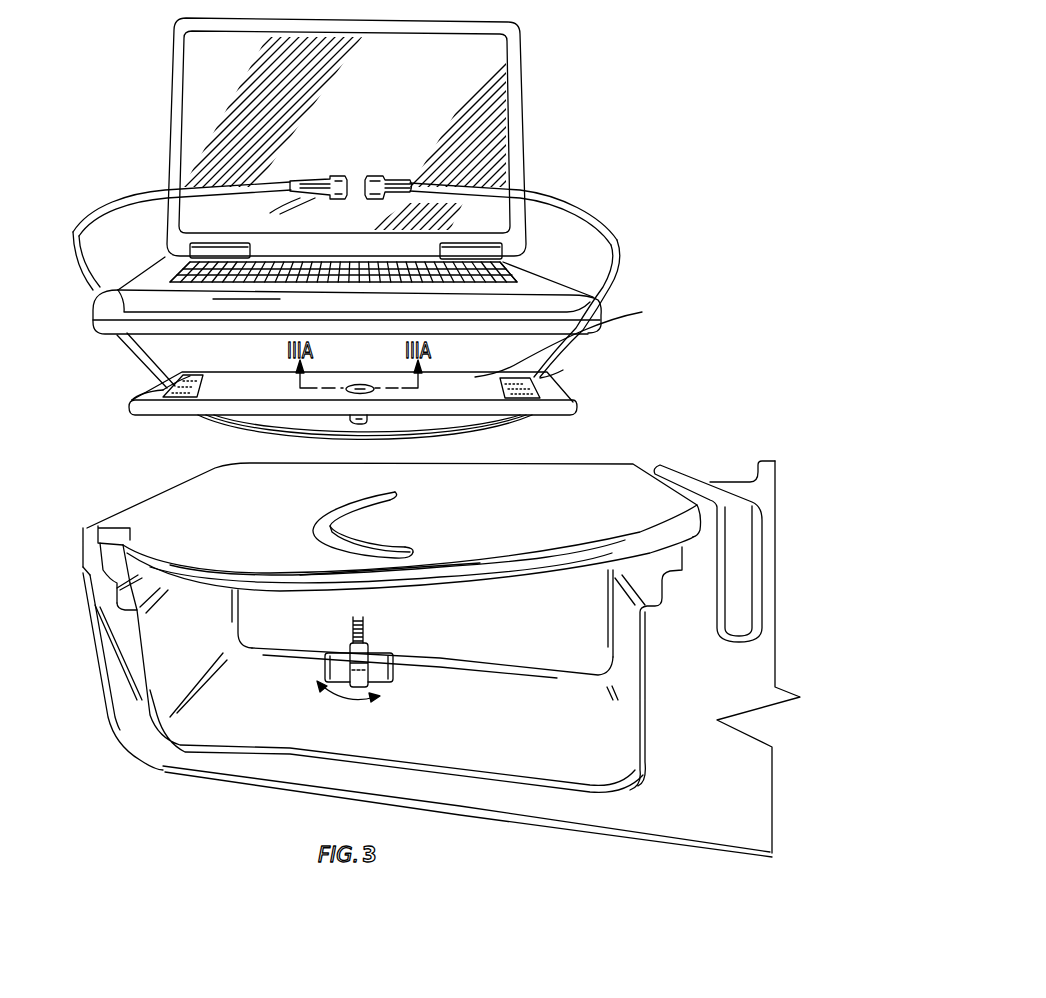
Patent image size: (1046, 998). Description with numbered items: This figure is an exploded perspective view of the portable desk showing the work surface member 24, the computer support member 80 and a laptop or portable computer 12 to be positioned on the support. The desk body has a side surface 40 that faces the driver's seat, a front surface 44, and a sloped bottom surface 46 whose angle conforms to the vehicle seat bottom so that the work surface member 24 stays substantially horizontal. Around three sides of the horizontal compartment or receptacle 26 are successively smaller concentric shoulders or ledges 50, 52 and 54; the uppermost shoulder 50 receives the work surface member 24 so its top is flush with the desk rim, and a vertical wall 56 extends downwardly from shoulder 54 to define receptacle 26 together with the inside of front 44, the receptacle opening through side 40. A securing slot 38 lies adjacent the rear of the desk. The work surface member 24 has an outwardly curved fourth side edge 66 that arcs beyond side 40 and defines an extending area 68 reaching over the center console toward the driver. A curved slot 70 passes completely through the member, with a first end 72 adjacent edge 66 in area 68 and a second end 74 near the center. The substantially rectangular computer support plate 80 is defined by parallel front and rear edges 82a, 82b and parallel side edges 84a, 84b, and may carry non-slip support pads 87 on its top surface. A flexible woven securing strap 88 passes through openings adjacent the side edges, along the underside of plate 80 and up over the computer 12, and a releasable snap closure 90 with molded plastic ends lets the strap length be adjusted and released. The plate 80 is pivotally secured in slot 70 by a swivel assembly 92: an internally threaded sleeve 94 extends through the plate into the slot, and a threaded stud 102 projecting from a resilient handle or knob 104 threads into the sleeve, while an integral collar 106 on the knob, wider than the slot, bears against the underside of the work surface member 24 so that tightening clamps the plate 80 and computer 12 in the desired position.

The laptop or portable computer 12 is at (534, 118).
The work surface member 24 is at (569, 517).
The horizontal compartment or receptacle 26 is at (293, 740).
The securing slot 38 is at (740, 567).
The side surface 40 is at (716, 794).
The front surface 44 is at (100, 657).
The sloped bottom surface 46 is at (557, 827).
The uppermost shoulder 50 is at (83, 545).
The shoulder 52 is at (103, 570).
The shoulder 54 is at (128, 600).
The vertical wall 56 is at (637, 664).
The curved fourth side edge 66 is at (485, 573).
The extending area 68 is at (235, 543).
The curved slot 70 is at (372, 545).
The first end of slot 72 is at (413, 553).
The second end of slot 74 is at (397, 493).
The computer support plate or member 80 is at (571, 392).
The front edge of support plate 82a is at (170, 409).
The rear edge of support plate 82b is at (574, 338).
The side edge of support plate 84a is at (155, 389).
The side edge of support plate 84b is at (578, 410).
The non-slip support pads 87 is at (195, 372).
The securing strap 88 is at (566, 205).
The releasable snap closure 90 is at (373, 177).
The swivel assembly 92 is at (336, 426).
The internally threaded sleeve or stud 94 is at (360, 383).
The threaded stud 102 is at (365, 627).
The resilient handle or knob 104 is at (377, 680).
The integral collar 106 is at (348, 648).